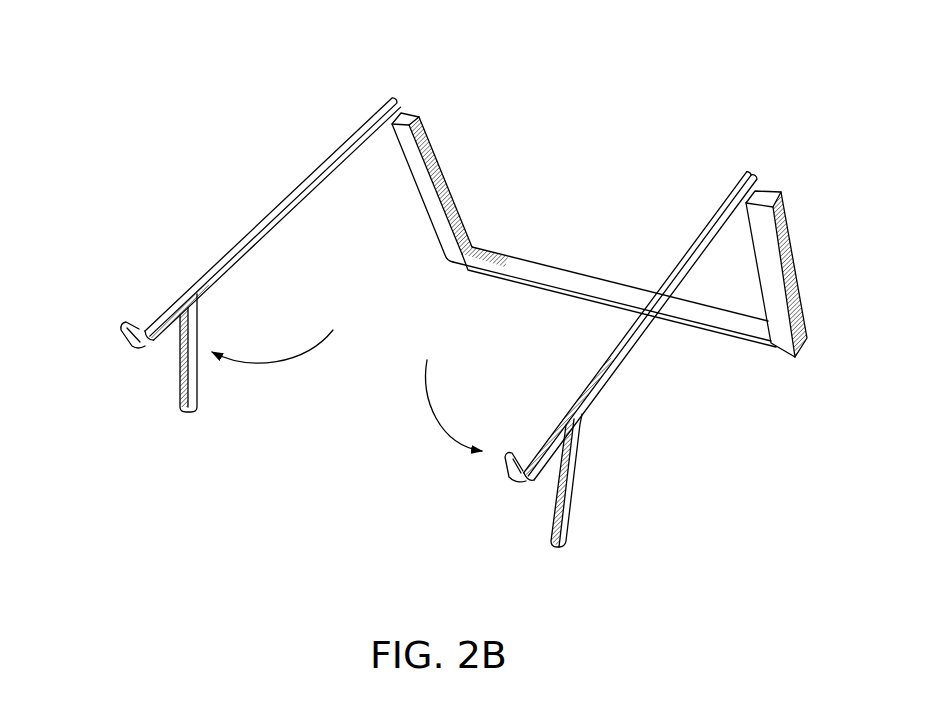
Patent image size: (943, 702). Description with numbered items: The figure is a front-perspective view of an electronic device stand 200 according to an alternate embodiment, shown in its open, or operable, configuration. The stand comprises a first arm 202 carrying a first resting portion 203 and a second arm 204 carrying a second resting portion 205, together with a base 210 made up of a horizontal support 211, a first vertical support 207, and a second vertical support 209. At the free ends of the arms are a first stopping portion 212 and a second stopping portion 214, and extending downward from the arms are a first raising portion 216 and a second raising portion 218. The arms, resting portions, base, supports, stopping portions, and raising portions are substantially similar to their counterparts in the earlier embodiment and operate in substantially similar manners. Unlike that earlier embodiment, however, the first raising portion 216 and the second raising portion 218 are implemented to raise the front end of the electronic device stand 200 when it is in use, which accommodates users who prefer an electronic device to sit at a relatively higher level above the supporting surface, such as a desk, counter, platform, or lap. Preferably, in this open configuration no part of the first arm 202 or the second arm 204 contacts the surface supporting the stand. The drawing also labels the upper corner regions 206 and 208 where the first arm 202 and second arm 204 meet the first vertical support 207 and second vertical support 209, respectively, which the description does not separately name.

The electronic device stand 200 is at (199, 64).
The first arm 202 is at (270, 232).
The first resting portion 203 is at (250, 230).
The second arm 204 is at (632, 354).
The second resting portion 205 is at (604, 359).
The first corner joint 206 is at (405, 108).
The first vertical support 207 is at (446, 176).
The second corner joint 208 is at (758, 192).
The second vertical support 209 is at (803, 263).
The base 210 is at (567, 263).
The horizontal support 211 is at (523, 268).
The first stopping portion 212 is at (123, 348).
The second stopping portion 214 is at (512, 478).
The first raising portion 216 is at (192, 400).
The second raising portion 218 is at (570, 487).